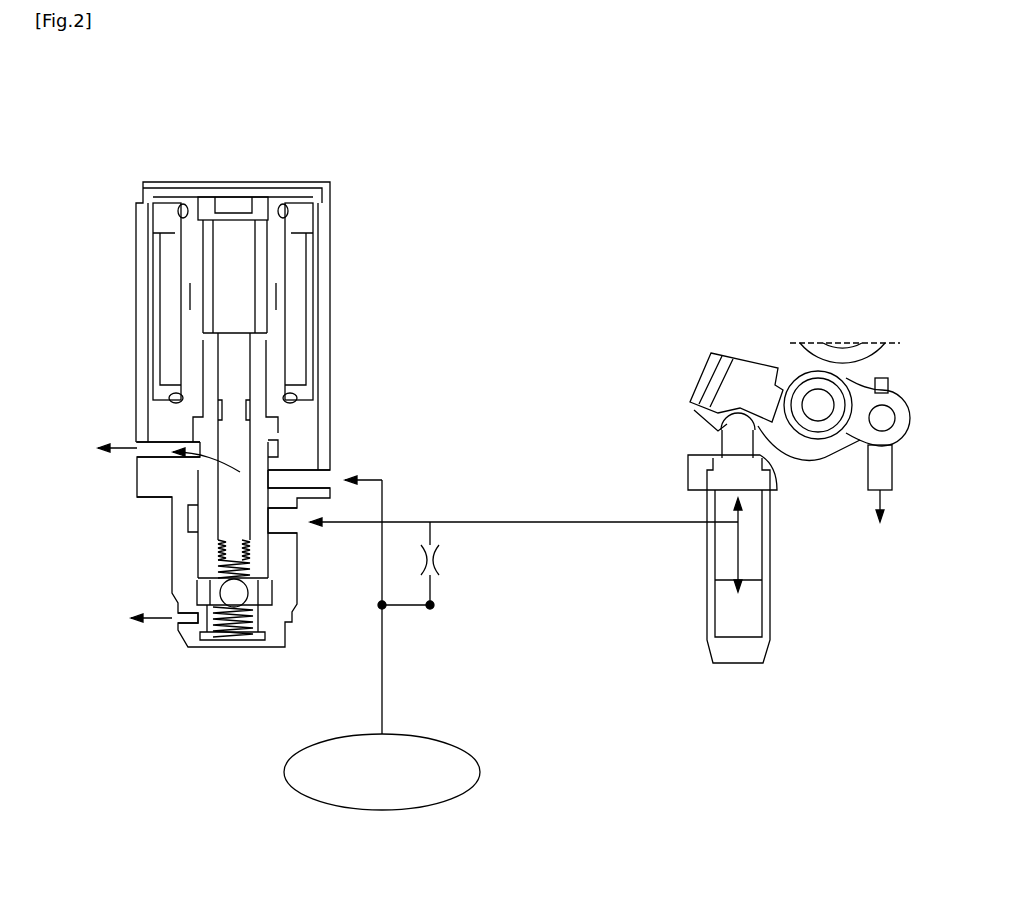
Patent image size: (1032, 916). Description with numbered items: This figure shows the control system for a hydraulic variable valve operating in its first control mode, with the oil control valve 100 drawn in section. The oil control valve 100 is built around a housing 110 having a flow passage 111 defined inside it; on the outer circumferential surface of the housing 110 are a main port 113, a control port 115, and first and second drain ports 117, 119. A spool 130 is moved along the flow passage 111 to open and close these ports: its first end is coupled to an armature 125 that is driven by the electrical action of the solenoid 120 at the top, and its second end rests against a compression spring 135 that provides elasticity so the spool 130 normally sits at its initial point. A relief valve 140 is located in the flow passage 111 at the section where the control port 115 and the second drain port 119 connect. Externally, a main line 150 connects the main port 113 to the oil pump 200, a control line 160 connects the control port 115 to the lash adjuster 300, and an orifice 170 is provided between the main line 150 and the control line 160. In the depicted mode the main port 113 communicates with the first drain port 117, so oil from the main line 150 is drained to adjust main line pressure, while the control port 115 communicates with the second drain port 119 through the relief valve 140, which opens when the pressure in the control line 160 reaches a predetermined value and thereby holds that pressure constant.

The oil control valve 100 is at (323, 160).
The housing 110 is at (318, 440).
The flow passage 111 is at (303, 480).
The main port 113 is at (330, 487).
The control port 115 is at (296, 527).
The first drain port 117 is at (159, 450).
The second drain port 119 is at (180, 618).
The solenoid 120 is at (303, 277).
The armature 125 is at (232, 212).
The spool 130 is at (232, 358).
The compression spring 135 is at (250, 572).
The relief valve 140 is at (268, 600).
The main line 150 is at (403, 607).
The control line 160 is at (555, 522).
The orifice 170 is at (443, 562).
The oil pump 200 is at (481, 772).
The lash adjuster 300 is at (770, 584).